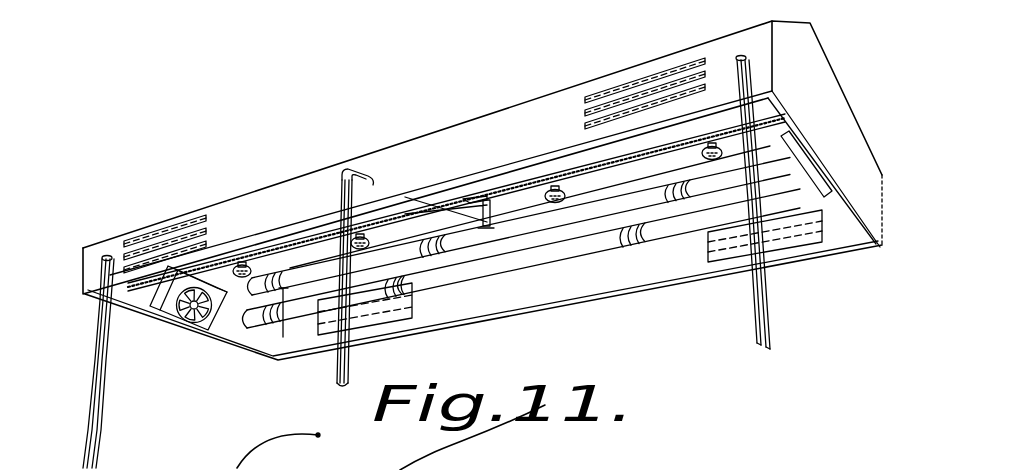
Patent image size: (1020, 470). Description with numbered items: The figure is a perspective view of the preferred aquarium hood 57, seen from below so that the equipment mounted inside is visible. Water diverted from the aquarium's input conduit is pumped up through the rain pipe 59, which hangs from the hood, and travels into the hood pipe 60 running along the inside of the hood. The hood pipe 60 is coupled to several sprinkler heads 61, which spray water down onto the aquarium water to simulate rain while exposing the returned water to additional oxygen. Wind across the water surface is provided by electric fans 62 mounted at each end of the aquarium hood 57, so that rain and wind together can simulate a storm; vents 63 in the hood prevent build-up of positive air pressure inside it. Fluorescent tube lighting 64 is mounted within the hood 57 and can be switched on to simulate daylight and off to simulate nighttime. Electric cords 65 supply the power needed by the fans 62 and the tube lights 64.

The aquarium hood 57 is at (107, 243).
The rain pipe 59 is at (333, 376).
The hood pipe 60 is at (298, 241).
The sprinkler heads 61 is at (360, 250).
The electric fans 62 is at (166, 292).
The vents 63 is at (160, 232).
The fluorescent tube lighting 64 is at (782, 167).
The electric cords 65 is at (90, 429).